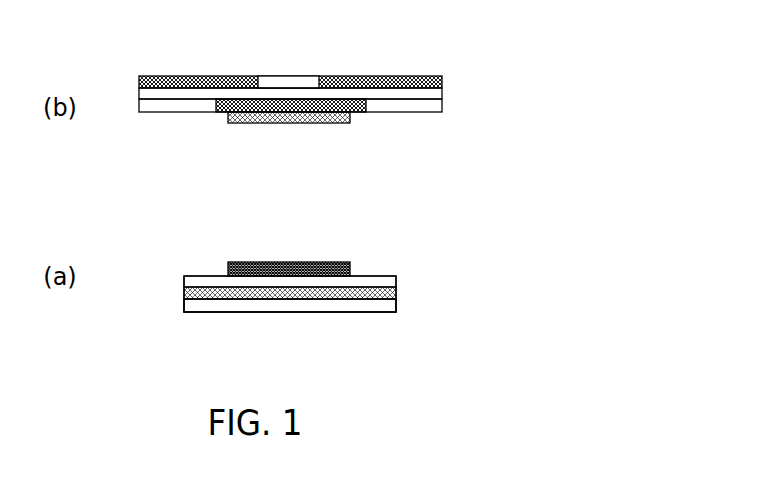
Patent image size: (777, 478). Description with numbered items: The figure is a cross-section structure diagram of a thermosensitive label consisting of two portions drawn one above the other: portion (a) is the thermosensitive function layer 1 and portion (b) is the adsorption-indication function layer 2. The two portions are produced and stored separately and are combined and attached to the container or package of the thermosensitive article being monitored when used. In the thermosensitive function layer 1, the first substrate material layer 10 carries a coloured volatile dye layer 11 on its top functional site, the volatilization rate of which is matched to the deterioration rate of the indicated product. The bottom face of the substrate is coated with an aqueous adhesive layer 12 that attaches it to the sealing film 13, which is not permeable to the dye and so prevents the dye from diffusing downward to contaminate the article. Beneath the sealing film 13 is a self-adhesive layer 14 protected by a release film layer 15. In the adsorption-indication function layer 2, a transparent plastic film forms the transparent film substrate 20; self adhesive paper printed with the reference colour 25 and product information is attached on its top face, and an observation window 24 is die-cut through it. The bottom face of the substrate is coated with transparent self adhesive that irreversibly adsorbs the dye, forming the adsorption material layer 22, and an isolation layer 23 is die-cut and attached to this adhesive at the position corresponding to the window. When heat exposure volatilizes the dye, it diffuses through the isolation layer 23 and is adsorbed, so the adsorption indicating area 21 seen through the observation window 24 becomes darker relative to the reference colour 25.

The thermosensitive function layer 1 is at (286, 291).
The first substrate material layer 10 is at (224, 263).
The volatile dye layer 11 is at (316, 262).
The aqueous adhesive layer 12 is at (352, 274).
The sealing film 13 is at (367, 283).
The self-adhesive layer 14 is at (357, 298).
The release film layer 15 is at (300, 308).
The adsorption-indication function layer 2 is at (283, 80).
The transparent film substrate 20 is at (224, 99).
The adsorption indicating area 21 is at (322, 107).
The adsorption material layer 22 is at (192, 106).
The isolation layer 23 is at (338, 123).
The observation window 24 is at (293, 82).
The reference colour 25 is at (408, 82).